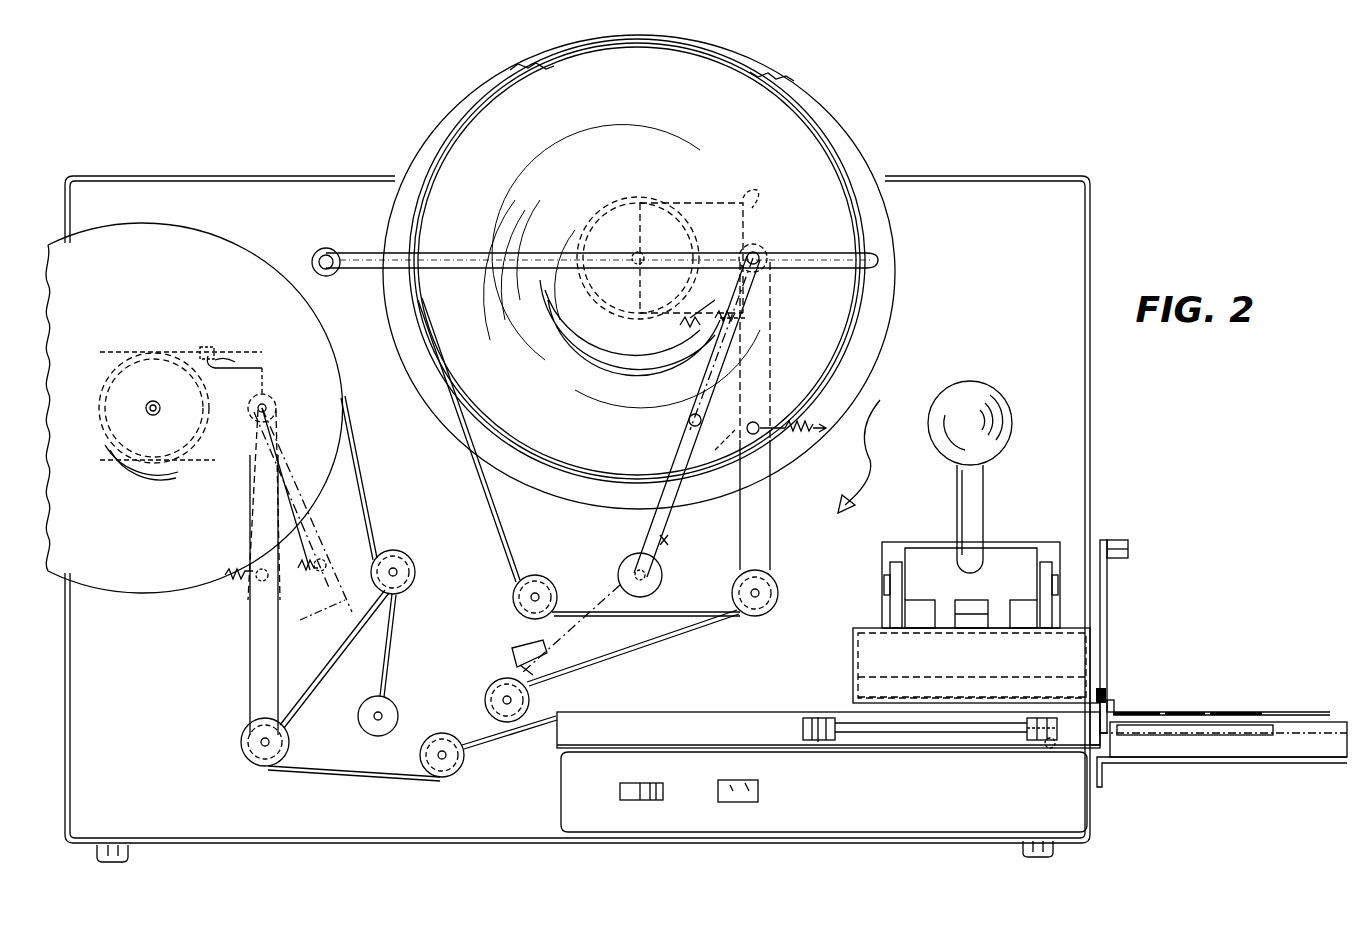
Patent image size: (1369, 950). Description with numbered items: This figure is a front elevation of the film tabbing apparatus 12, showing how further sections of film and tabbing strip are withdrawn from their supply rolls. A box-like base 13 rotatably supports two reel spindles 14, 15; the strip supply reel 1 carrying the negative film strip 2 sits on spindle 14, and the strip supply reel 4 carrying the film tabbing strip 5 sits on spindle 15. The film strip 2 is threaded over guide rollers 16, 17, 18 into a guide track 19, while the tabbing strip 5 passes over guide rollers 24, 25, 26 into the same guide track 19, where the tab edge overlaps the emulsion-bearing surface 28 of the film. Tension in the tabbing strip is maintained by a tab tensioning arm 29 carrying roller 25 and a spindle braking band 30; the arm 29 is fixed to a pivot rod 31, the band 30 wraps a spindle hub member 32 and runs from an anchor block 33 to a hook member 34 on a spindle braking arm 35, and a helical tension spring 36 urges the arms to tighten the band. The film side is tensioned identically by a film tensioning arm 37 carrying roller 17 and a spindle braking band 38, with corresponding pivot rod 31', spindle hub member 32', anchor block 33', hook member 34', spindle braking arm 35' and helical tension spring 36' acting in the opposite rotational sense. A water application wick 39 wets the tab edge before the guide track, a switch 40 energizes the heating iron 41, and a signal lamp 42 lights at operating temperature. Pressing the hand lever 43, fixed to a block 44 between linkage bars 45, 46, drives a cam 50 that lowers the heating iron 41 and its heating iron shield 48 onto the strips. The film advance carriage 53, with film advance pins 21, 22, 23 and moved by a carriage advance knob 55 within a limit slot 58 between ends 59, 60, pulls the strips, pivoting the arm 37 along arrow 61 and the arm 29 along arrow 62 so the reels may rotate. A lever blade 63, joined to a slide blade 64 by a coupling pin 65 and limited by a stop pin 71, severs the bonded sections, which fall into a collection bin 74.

The strip supply reel 1 is at (243, 248).
The negative film strip 2 is at (358, 770).
The strip supply reel 4 is at (442, 125).
The film tabbing strip 5 is at (828, 170).
The film tabbing apparatus 12 is at (868, 444).
The box-like base 13 is at (1005, 176).
The reel spindle 14 is at (161, 408).
The reel spindle 15 is at (638, 254).
The guide roller 16 is at (385, 556).
The guide roller 17 is at (288, 740).
The guide roller 18 is at (400, 712).
The guide track 19 is at (636, 725).
The film advance pin 21 is at (1155, 712).
The film advance pin 22 is at (1207, 712).
The film advance pin 23 is at (1264, 712).
The guide roller 24 is at (546, 578).
The guide roller 25 is at (628, 557).
The guide roller 26 is at (495, 686).
The emulsion-bearing surface 28 is at (490, 747).
The tab tensioning arm 29 is at (735, 570).
The spindle braking band 30 is at (705, 203).
The pivot rod 31 is at (765, 246).
The spindle hub member 32 is at (692, 258).
The anchor block 33 is at (781, 201).
The hook member 34 is at (712, 298).
The spindle braking arm 35 is at (728, 416).
The helical tension spring 36 is at (764, 457).
The film tensioning arm 37 is at (250, 650).
The spindle braking band 38 is at (176, 352).
The water application wick 39 is at (533, 672).
The switch 40 is at (662, 790).
The heating iron 41 is at (852, 655).
The signal lamp 42 is at (758, 796).
The hand lever 43 is at (960, 494).
The block 44 is at (1005, 548).
The linkage bar 45 is at (895, 602).
The linkage bar 46 is at (1045, 585).
The heating iron shield 48 is at (865, 628).
The cam 50 is at (972, 625).
The film advance carriage 53 is at (1260, 742).
The carriage advance knob 55 is at (803, 735).
The limit slot 58 is at (932, 735).
The end of limit slot 59 is at (816, 716).
The end of limit slot 60 is at (1050, 742).
The arrow 61 is at (316, 636).
The arrow 62 is at (742, 552).
The lever blade 63 is at (1108, 606).
The slide blade 64 is at (1100, 690).
The coupling pin 65 is at (1112, 706).
The stop pin 71 is at (1098, 710).
The collection bin 74 is at (1195, 760).
The pivot rod 31' is at (290, 400).
The spindle hub member 32' is at (118, 460).
The anchor block 33' is at (245, 484).
The hook member 34' is at (232, 327).
The spindle braking arm 35' is at (283, 510).
The helical tension spring 36' is at (243, 583).